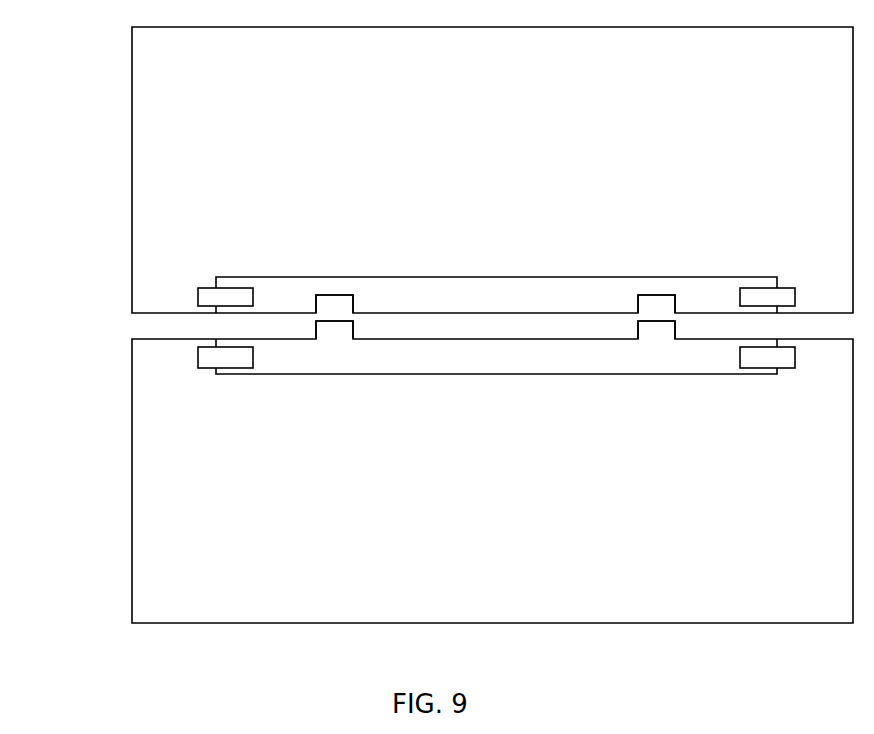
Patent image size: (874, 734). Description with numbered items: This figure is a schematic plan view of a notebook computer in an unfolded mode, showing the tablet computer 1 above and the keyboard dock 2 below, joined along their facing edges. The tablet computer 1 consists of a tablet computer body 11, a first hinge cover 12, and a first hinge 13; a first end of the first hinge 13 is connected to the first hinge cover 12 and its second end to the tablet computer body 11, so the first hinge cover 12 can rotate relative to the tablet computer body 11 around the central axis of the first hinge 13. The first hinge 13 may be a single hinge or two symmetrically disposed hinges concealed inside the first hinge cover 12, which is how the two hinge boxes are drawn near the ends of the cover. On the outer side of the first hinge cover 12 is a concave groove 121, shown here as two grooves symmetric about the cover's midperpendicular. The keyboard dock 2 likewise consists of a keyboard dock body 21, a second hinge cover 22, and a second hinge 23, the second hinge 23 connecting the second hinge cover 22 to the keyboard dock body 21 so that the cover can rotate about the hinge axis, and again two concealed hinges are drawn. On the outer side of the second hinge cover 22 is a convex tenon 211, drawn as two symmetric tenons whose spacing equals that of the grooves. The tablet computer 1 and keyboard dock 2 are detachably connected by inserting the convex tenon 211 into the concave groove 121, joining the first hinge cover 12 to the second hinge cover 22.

The tablet computer 1 is at (433, 170).
The tablet computer body 11 is at (160, 295).
The first hinge cover 12 is at (470, 295).
The concave groove 121 is at (327, 303).
The first hinge 13 is at (230, 295).
The keyboard dock 2 is at (430, 462).
The keyboard dock body 21 is at (168, 358).
The second hinge cover 22 is at (480, 357).
The protrusion 211 is at (337, 330).
The second hinge 23 is at (238, 358).